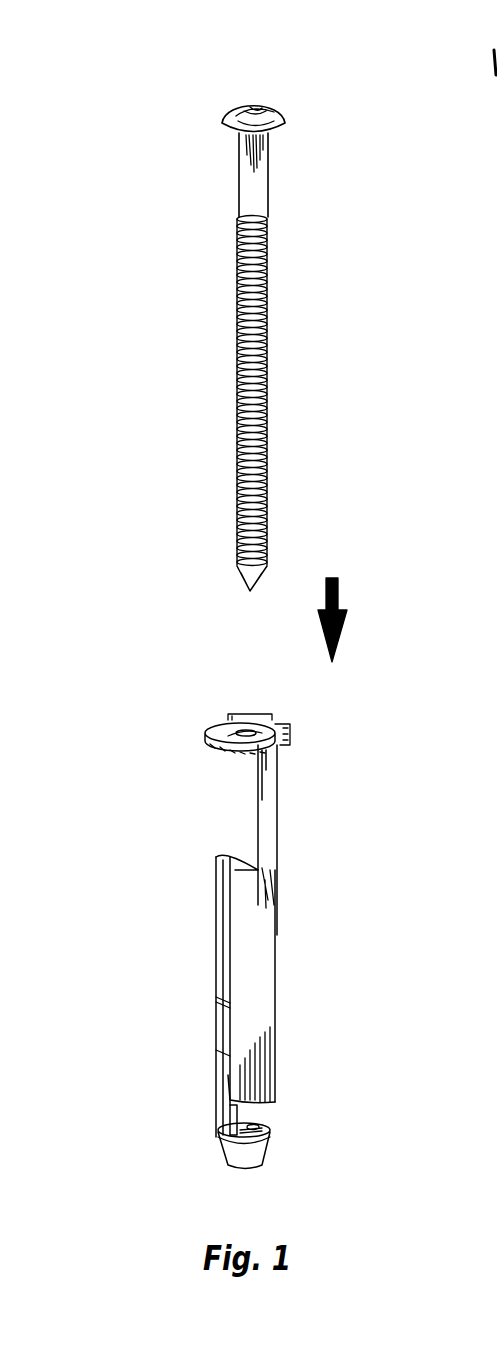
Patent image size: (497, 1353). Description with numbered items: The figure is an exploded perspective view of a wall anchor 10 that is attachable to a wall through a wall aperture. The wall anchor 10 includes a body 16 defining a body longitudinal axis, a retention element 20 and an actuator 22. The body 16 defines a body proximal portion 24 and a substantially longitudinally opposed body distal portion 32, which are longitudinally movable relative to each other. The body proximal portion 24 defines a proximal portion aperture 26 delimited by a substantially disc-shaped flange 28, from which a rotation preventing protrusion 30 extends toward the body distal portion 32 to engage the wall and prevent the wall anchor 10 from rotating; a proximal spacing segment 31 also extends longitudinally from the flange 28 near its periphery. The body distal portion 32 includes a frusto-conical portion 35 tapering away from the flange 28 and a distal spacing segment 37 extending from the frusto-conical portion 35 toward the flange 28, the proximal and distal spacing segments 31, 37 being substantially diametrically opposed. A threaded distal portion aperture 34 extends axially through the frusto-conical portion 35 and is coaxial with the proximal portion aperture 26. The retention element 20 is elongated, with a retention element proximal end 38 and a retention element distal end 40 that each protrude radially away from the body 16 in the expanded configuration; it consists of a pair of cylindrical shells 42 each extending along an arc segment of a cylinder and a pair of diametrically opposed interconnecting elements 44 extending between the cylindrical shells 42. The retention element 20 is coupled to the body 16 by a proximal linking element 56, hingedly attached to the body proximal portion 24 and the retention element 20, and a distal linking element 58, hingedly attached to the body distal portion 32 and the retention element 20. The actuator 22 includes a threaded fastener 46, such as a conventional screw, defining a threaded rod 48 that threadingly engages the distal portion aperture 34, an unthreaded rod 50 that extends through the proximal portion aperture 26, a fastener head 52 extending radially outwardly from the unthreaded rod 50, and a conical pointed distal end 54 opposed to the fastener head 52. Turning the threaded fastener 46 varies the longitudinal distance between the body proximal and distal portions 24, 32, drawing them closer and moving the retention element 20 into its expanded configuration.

The wall anchor 10 is at (86, 97).
The actuator 22 is at (292, 443).
The fastener head 52 is at (287, 120).
The unthreaded rod 50 is at (265, 178).
The threaded rod 48 is at (265, 327).
The pointed distal end 54 is at (243, 580).
The threaded fastener 46 is at (228, 202).
The body 16 is at (182, 745).
The body proximal portion 24 is at (302, 708).
The rotation preventing protrusion 30 is at (277, 760).
The proximal portion aperture 26 is at (252, 730).
The flange 28 is at (242, 733).
The proximal spacing segment 31 is at (263, 815).
The proximal linking element 56 is at (275, 906).
The retention element 20 is at (201, 957).
The retention element proximal end 38 is at (222, 860).
The cylindrical shells 42 is at (215, 985).
The interconnecting elements 44 is at (220, 1022).
The distal linking element 58 is at (227, 1074).
The retention element distal end 40 is at (283, 1100).
The body distal portion 32 is at (203, 1118).
The distal portion aperture 34 is at (260, 1113).
The frusto-conical portion 35 is at (262, 1158).
The distal spacing segment 37 is at (272, 1139).